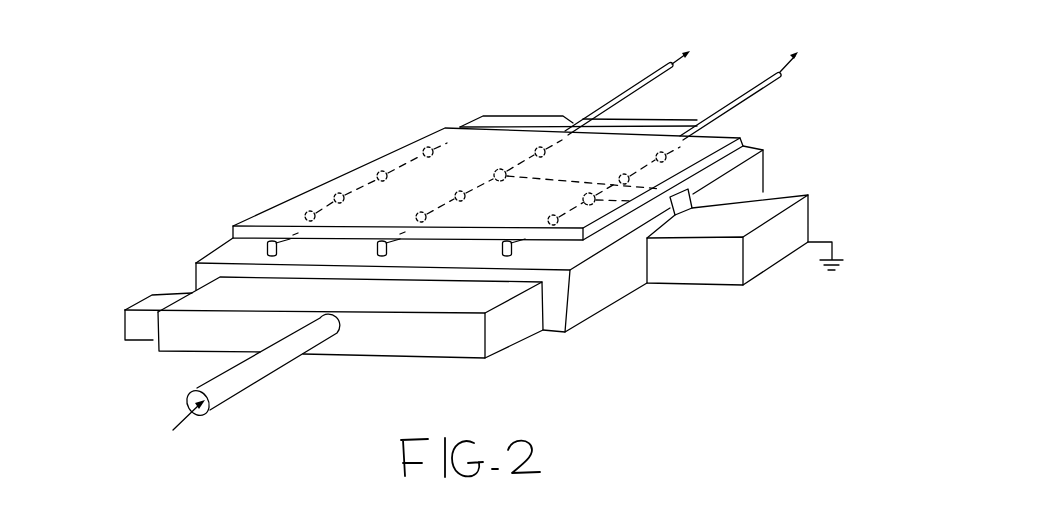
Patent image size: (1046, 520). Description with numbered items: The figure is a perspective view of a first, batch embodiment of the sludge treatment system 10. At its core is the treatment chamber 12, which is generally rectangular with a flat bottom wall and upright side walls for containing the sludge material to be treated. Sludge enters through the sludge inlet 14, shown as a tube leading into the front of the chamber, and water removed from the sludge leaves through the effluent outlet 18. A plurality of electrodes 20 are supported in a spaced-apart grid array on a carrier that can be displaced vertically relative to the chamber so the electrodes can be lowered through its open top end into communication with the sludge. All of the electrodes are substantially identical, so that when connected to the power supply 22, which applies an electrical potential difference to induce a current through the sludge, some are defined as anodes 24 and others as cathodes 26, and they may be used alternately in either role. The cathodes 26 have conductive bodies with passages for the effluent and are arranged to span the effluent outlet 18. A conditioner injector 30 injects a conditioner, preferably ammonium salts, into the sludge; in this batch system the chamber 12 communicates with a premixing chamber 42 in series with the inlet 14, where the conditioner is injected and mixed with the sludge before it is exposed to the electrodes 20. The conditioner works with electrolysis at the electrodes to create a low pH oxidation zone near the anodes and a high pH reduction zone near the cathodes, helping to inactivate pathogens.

The sludge treatment system 10 is at (180, 160).
The treatment chamber 12 is at (580, 322).
The sludge inlet 14 is at (260, 372).
The effluent outlet 18 is at (652, 80).
The electrodes 20 is at (334, 192).
The power supply 22 is at (808, 212).
The anodes 24 is at (492, 170).
The cathodes 26 is at (590, 206).
The conditioner injector 30 is at (159, 293).
The premixing chamber 42 is at (140, 347).